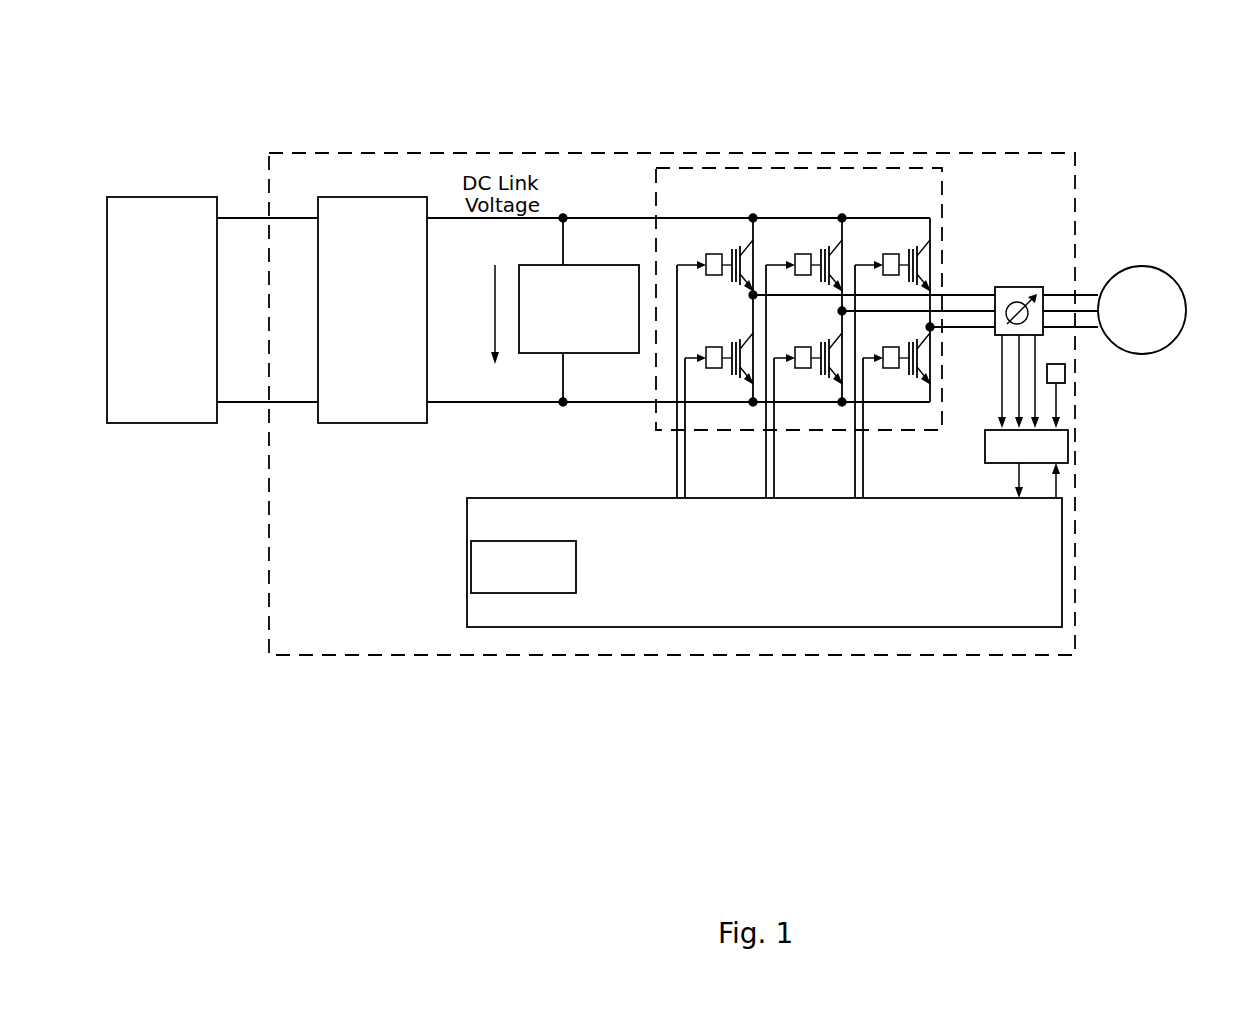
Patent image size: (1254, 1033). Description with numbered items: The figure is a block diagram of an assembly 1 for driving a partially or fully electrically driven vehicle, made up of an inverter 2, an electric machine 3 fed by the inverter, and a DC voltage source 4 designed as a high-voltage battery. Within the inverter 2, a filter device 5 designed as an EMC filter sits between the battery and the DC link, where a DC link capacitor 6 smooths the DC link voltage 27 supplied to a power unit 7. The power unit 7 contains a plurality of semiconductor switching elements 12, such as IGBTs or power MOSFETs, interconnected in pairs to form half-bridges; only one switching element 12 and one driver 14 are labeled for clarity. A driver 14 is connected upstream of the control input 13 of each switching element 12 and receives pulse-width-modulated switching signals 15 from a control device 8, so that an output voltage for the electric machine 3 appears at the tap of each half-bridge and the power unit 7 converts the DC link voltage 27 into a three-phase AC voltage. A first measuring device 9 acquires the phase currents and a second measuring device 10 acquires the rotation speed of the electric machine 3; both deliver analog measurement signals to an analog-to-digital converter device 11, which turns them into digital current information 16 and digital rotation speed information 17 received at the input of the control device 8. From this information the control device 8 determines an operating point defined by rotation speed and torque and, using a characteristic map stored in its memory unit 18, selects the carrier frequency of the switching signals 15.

The assembly 1 is at (721, 344).
The inverter 2 is at (680, 153).
The electric machine 3 is at (1142, 266).
The DC voltage source 4 is at (162, 197).
The filter device 5 is at (372, 197).
The DC link capacitor 6 is at (580, 263).
The power unit 7 is at (775, 168).
The control device 8 is at (818, 498).
The first measuring device 9 is at (1019, 287).
The second measuring device 10 is at (1066, 374).
The analog-to-digital converter device 11 is at (984, 448).
The switching element 12 is at (727, 257).
The control input 13 is at (734, 286).
The driver 14 is at (714, 254).
The pulse-width-modulated switching signals 15 is at (696, 488).
The current information 16 is at (1016, 483).
The rotation speed information 17 is at (1060, 481).
The memory unit 18 is at (577, 566).
The DC link voltage 27 is at (496, 273).